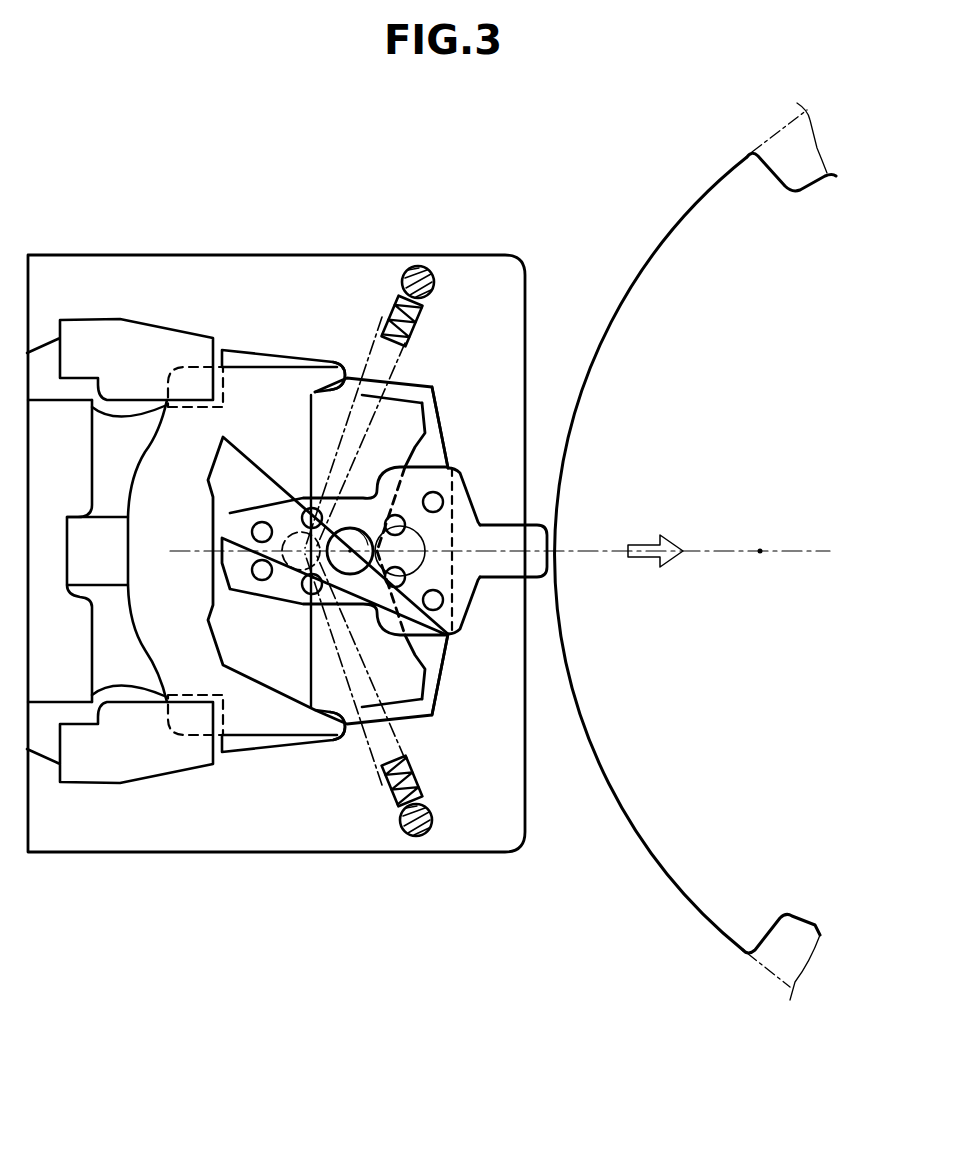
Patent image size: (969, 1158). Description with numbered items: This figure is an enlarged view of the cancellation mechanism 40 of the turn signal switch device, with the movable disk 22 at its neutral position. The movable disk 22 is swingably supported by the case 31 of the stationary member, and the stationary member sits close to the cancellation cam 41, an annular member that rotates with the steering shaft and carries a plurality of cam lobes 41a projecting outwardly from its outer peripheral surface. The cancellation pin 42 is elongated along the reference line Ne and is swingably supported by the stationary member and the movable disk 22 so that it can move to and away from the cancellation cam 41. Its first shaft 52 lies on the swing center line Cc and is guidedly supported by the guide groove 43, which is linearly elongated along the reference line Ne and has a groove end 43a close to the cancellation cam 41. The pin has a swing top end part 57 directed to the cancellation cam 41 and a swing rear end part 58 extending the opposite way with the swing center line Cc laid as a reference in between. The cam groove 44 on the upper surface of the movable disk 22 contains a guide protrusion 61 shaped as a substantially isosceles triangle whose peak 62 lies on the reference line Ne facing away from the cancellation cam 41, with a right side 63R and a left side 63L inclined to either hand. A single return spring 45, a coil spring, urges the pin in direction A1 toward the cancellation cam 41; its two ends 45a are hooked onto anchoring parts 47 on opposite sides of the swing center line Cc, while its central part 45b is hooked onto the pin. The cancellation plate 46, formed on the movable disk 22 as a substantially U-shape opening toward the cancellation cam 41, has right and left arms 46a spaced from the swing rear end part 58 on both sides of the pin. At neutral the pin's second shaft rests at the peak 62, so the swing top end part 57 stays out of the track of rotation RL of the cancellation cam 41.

The cancellation mechanism 40 is at (179, 118).
The movable disk 22 is at (71, 418).
The cancellation plate 46 is at (187, 426).
The arms of the cancellation plate 46a is at (263, 386).
The return spring 45 is at (373, 310).
The ends of the coil spring 45a is at (390, 296).
The central part of the coil spring 45b is at (296, 572).
The anchoring parts 47 is at (417, 265).
The case 31 is at (466, 272).
The cancellation cam 41 is at (640, 262).
The cam lobes 41a is at (688, 240).
The track of rotation RL is at (755, 150).
The cam groove 44 is at (392, 410).
The peak of the guide protrusion 62 is at (395, 485).
The left side of the guide protrusion 63L is at (432, 437).
The right side of the guide protrusion 63R is at (388, 634).
The guide protrusion 61 is at (438, 455).
The cancellation pin 42 is at (486, 500).
The swing top end part 57 is at (536, 535).
The direction toward the cancellation cam A1 is at (667, 542).
The reference line Ne is at (760, 553).
The guide groove 43 is at (292, 540).
The groove end 43a is at (424, 566).
The swing rear end part 58 is at (288, 566).
The swing center line Cc is at (349, 576).
The first shaft 52 is at (358, 574).